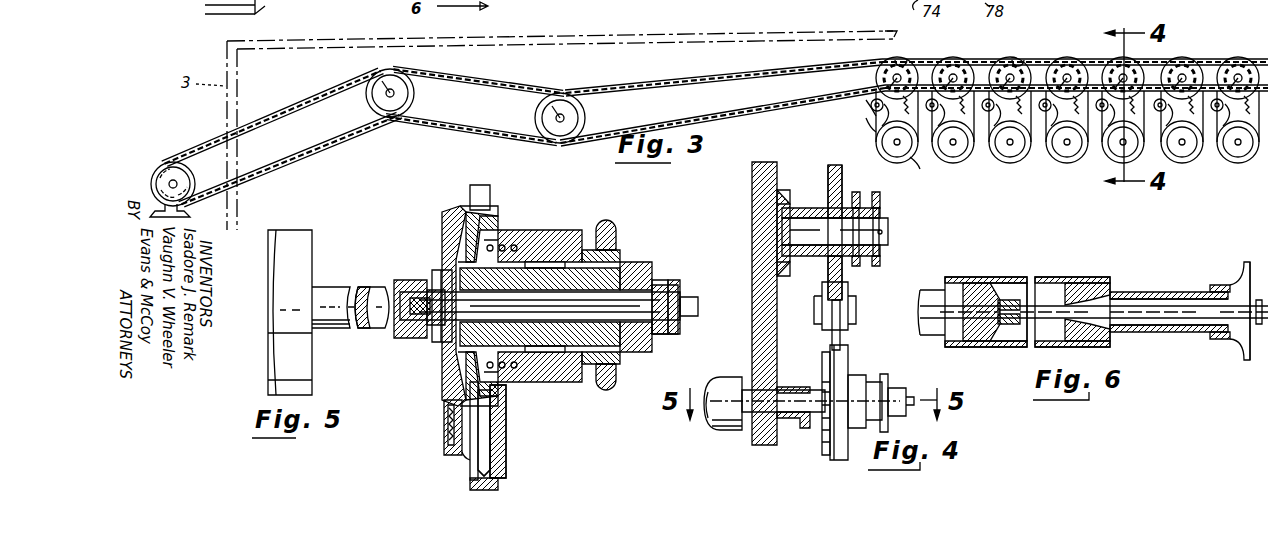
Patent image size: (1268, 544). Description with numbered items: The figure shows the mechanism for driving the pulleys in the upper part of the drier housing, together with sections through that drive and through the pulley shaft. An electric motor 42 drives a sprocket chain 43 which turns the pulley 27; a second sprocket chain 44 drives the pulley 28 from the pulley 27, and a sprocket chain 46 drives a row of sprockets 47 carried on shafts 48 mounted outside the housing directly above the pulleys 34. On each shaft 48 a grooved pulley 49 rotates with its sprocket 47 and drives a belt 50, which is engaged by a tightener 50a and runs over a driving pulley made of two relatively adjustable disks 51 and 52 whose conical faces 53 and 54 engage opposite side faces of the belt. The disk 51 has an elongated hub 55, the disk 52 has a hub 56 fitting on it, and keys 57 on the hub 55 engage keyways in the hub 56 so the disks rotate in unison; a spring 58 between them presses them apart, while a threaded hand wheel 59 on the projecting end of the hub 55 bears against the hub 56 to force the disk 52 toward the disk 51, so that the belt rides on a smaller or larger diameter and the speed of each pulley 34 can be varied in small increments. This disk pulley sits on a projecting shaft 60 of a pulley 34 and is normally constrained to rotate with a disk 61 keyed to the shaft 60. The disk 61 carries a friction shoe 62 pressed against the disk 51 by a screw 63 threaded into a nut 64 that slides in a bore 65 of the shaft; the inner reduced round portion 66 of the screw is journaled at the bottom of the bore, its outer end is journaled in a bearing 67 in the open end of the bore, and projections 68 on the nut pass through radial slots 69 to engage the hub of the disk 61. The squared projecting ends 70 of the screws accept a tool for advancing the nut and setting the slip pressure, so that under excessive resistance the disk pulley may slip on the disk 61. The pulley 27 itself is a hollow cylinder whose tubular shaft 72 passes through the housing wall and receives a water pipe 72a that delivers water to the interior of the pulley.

In FIG. 3, the pulley 27 is at (382, 78).
In FIG. 6, the pulley 27 is at (1052, 268).
In FIG. 3, the pulley 28 is at (558, 105).
In FIG. 5, the pulleys 34 is at (288, 230).
In FIG. 4, the pulleys 34 is at (732, 432).
In FIG. 3, the electric motor 42 is at (169, 166).
In FIG. 3, the sprocket chain 43 is at (298, 156).
In FIG. 3, the sprocket chain 44 is at (468, 76).
In FIG. 3, the sprocket chain 46 is at (696, 74).
In FIG. 3, the sprockets 47 is at (1035, 65).
In FIG. 4, the sprockets 47 is at (872, 190).
In FIG. 3, the shafts 48 is at (910, 62).
In FIG. 4, the shafts 48 is at (894, 220).
In FIG. 3, the grooved pulley 49 is at (1180, 60).
In FIG. 4, the grooved pulley 49 is at (826, 182).
In FIG. 3, the belt 50 is at (866, 124).
In FIG. 5, the belt 50 is at (489, 192).
In FIG. 4, the belt 50 is at (850, 334).
In FIG. 3, the tightener 50a is at (866, 108).
In FIG. 4, the tightener 50a is at (846, 304).
In FIG. 3, the disk 51 is at (922, 158).
In FIG. 5, the disk 51 is at (440, 400).
In FIG. 5, the disk 52 is at (510, 414).
In FIG. 4, the disk 52 is at (860, 464).
In FIG. 5, the conical face 53 is at (462, 460).
In FIG. 5, the conical face 54 is at (510, 452).
In FIG. 5, the elongated hub 55 is at (619, 248).
In FIG. 5, the hub 56 is at (571, 260).
In FIG. 4, the hub 56 is at (866, 378).
In FIG. 5, the keys 57 is at (544, 238).
In FIG. 5, the spring 58 is at (511, 228).
In FIG. 5, the hand wheel 59 is at (608, 218).
In FIG. 4, the hand wheel 59 is at (888, 384).
In FIG. 5, the shaft 60 is at (370, 282).
In FIG. 4, the shaft 60 is at (746, 380).
In FIG. 3, the disk 61 is at (1064, 146).
In FIG. 5, the disk 61 is at (438, 215).
In FIG. 4, the disk 61 is at (824, 451).
In FIG. 5, the friction shoe 62 is at (440, 436).
In FIG. 5, the screw 63 is at (622, 354).
In FIG. 5, the nut 64 is at (426, 336).
In FIG. 5, the bore 65 is at (656, 345).
In FIG. 5, the reduced round portion 66 is at (390, 338).
In FIG. 5, the bearing 67 is at (678, 280).
In FIG. 5, the projections 68 is at (432, 240).
In FIG. 5, the radial slots 69 is at (424, 270).
In FIG. 5, the projecting ends 70 is at (696, 296).
In FIG. 4, the projecting ends 70 is at (908, 412).
In FIG. 6, the tubular shaft 72 is at (1164, 286).
In FIG. 6, the water pipe 72a is at (1247, 264).